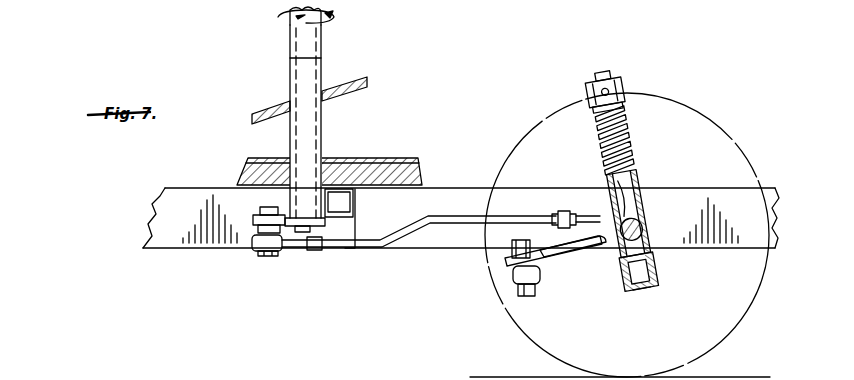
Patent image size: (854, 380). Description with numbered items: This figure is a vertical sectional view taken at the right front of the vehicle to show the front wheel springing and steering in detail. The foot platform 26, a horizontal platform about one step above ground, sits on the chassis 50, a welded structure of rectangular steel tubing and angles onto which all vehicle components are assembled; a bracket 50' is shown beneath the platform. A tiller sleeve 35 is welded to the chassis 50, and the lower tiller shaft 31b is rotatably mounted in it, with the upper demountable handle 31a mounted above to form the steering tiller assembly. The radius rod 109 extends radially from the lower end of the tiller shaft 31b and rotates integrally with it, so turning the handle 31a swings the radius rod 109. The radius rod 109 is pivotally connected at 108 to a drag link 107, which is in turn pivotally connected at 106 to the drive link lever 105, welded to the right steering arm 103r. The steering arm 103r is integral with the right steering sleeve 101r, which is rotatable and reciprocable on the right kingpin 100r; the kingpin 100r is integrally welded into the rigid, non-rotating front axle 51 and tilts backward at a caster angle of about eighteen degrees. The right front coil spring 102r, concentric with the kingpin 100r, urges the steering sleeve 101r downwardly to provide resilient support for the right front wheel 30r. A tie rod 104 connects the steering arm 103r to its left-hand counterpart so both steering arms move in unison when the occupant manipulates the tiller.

The foot platform 26 is at (396, 162).
The right front wheel 30r is at (710, 109).
The upper demountable handle 31a is at (296, 20).
The lower tiller shaft 31b is at (322, 70).
The tiller sleeve 35 is at (322, 130).
The chassis 50 is at (461, 198).
The bracket 50' is at (349, 233).
The front axle 51 is at (628, 288).
The right kingpin 100r is at (626, 140).
The right steering sleeve 101r is at (644, 190).
The right front coil spring 102r is at (630, 151).
The right steering arm 103r is at (555, 258).
The tie rod 104 is at (542, 281).
The drive link lever 105 is at (580, 216).
The pivotal connection 106 is at (634, 218).
The drag link 107 is at (468, 220).
The pivotal connection 108 is at (272, 258).
The radius rod 109 is at (287, 250).